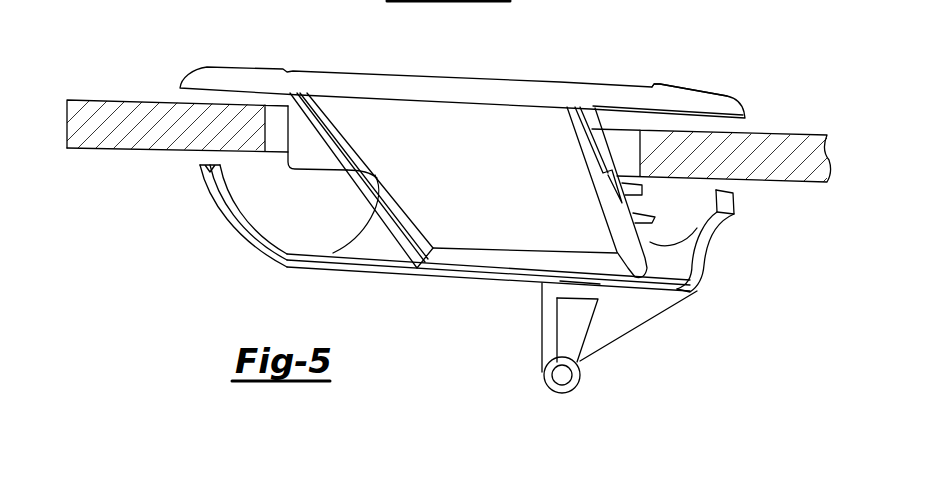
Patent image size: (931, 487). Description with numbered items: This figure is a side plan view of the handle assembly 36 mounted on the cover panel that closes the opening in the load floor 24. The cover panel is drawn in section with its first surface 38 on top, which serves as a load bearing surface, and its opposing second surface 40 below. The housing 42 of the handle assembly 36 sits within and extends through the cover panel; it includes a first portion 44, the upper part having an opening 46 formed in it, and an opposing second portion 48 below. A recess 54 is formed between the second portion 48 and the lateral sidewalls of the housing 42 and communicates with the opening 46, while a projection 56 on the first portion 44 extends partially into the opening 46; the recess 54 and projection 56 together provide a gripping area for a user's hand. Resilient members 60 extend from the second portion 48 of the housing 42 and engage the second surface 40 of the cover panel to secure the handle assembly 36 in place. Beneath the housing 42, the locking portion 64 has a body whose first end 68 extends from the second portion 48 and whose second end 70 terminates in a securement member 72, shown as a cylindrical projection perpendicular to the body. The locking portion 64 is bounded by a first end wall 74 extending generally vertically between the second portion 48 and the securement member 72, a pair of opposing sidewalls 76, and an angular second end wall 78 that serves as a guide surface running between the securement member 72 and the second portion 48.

The load floor 24 is at (112, 110).
The handle assembly 36 is at (505, 146).
The first surface 38 is at (800, 132).
The second surface 40 is at (110, 149).
The housing 42 is at (456, 146).
The first portion 44 is at (280, 72).
The opening 46 is at (532, 78).
The second portion 48 is at (442, 283).
The recess 54 is at (488, 179).
The projection 56 is at (672, 95).
The member 60 is at (225, 207).
The locking portion 64 is at (596, 360).
The first end 68 is at (576, 290).
The second end 70 is at (541, 361).
The securement member 72 is at (560, 397).
The first end wall 74 is at (540, 299).
The sidewalls 76 is at (592, 345).
The second end wall 78 is at (630, 337).